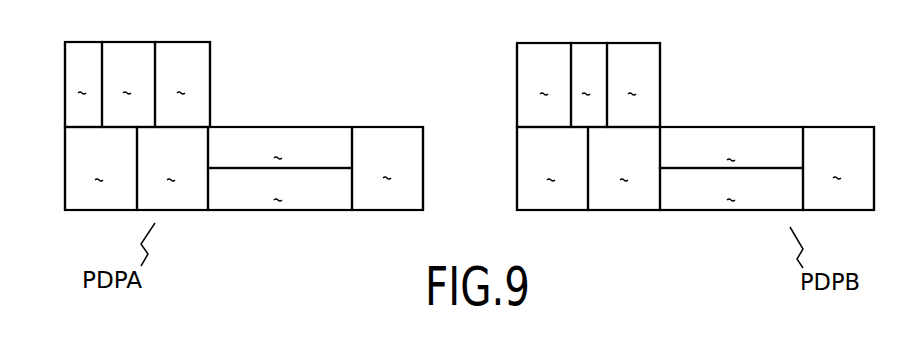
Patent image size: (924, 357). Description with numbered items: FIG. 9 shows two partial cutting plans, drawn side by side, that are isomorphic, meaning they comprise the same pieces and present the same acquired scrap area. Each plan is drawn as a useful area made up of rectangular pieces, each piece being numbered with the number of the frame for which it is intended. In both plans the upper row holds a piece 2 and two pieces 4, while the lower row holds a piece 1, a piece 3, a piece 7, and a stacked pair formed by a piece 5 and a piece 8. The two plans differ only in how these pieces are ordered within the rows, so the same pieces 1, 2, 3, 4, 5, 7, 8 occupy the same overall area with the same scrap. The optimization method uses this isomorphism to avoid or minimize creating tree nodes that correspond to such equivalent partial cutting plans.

The piece for frame one 1 is at (326, 168).
The piece for frame two 2 is at (336, 84).
The piece for frame three 3 is at (505, 168).
The piece for frame four 4 is at (381, 84).
The piece for frame five 5 is at (505, 168).
The piece for frame seven 7 is at (506, 168).
The piece for frame eight 8 is at (505, 168).